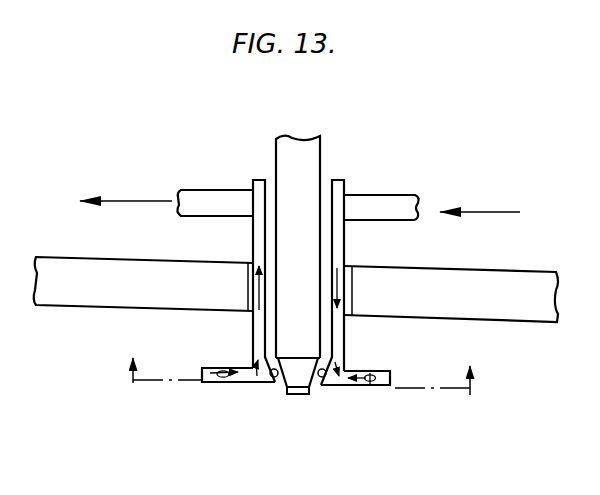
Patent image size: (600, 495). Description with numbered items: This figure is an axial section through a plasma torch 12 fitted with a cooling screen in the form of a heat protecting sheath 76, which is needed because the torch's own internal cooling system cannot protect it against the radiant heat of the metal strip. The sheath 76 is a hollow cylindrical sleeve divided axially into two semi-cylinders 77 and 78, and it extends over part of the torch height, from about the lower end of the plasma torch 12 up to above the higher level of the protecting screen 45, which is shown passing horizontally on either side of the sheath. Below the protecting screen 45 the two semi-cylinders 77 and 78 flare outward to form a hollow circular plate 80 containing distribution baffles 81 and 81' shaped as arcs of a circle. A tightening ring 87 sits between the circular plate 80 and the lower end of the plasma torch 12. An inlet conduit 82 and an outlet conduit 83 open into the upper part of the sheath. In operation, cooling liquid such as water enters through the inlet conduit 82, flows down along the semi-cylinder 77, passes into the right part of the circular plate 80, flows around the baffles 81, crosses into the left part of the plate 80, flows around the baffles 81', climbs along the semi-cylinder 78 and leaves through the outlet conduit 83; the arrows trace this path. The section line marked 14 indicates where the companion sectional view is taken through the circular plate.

The plasma torch 12 is at (317, 138).
The section line 14- 14 is at (301, 376).
The protecting screen 45 is at (532, 278).
The heat protecting sheath 76 is at (302, 276).
The semi-cylinder 77 is at (349, 242).
The semi-cylinder 78 is at (255, 236).
The circular plate 80 is at (210, 384).
The distribution baffle 81 is at (395, 367).
The distribution baffle 81' is at (215, 350).
The inlet conduit 82 is at (404, 202).
The outlet conduit 83 is at (212, 196).
The tightening ring 87 is at (312, 392).